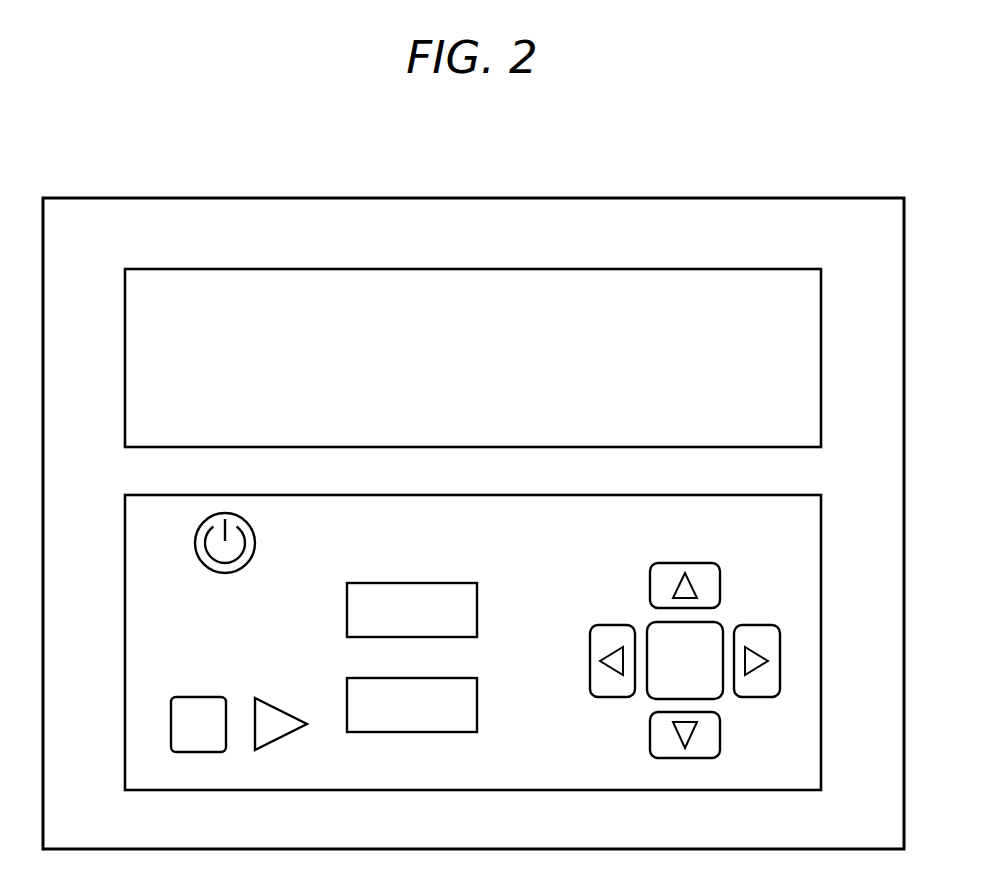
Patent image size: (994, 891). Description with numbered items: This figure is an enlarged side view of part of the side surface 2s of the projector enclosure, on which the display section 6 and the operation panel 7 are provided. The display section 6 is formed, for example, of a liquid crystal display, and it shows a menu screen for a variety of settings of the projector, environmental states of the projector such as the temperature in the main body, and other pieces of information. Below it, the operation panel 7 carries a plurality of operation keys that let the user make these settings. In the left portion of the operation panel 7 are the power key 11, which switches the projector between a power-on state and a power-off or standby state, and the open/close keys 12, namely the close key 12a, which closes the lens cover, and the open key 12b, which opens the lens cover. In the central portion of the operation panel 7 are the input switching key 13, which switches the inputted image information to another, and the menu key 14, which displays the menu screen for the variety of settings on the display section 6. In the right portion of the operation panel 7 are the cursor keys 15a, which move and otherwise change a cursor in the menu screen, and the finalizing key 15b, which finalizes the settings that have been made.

The side surface 2s is at (838, 172).
The display section 6 is at (808, 327).
The operation panel 7 is at (810, 525).
The power key 11 is at (257, 538).
The open/close keys 12 is at (241, 685).
The close key 12a is at (202, 697).
The open key 12b is at (279, 709).
The input switching key 13 is at (478, 608).
The menu key 14 is at (478, 700).
The cursor keys 15a is at (650, 577).
The finalizing key 15b is at (723, 625).